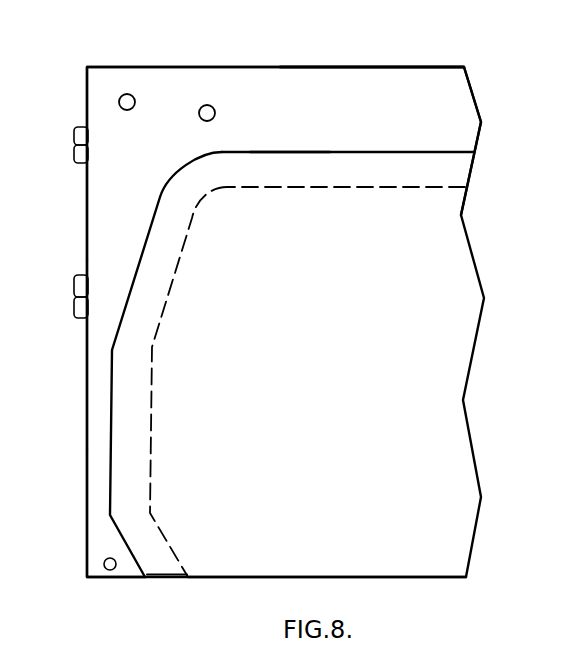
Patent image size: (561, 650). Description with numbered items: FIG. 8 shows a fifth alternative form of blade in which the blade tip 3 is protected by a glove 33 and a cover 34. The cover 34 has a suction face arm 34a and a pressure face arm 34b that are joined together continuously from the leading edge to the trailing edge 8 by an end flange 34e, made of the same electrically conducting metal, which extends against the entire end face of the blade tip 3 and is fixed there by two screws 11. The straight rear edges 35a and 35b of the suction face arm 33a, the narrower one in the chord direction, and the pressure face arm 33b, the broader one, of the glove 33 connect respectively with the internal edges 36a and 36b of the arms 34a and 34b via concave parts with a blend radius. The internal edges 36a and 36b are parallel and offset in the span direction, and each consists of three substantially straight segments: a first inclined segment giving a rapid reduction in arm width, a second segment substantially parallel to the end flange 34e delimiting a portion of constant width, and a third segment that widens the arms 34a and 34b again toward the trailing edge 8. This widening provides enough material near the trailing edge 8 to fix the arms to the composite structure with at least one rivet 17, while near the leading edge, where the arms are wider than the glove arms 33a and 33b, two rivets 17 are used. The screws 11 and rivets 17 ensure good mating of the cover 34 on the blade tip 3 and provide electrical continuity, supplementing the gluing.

The blade tip 3 is at (191, 580).
The trailing edge 8 is at (412, 578).
The screws 11 is at (78, 143).
The rivets 17 is at (205, 110).
The glove 33 is at (396, 66).
The suction face arm of the glove 33a is at (333, 98).
The pressure face arm of the glove 33b is at (272, 165).
The cover 34 is at (86, 405).
The suction face arm of the cover 34a is at (118, 184).
The pressure face arm of the cover 34b is at (142, 343).
The end flange of the cover 34e is at (87, 462).
The rear edge of the suction face arm of the glove 35a is at (333, 153).
The rear edge of the pressure face arm of the glove 35b is at (410, 188).
The internal edge of the suction face arm of the cover 36a is at (143, 250).
The internal edge of the pressure face arm of the cover 36b is at (162, 325).